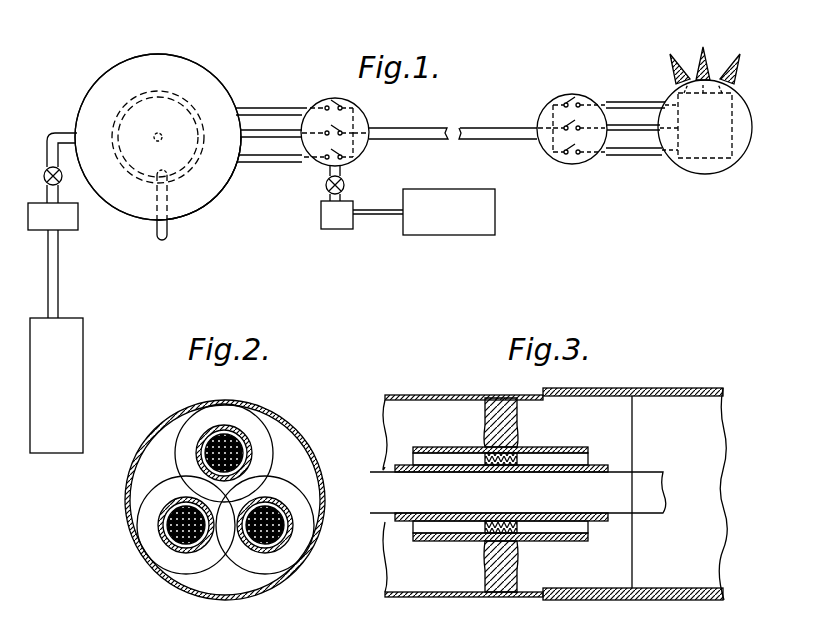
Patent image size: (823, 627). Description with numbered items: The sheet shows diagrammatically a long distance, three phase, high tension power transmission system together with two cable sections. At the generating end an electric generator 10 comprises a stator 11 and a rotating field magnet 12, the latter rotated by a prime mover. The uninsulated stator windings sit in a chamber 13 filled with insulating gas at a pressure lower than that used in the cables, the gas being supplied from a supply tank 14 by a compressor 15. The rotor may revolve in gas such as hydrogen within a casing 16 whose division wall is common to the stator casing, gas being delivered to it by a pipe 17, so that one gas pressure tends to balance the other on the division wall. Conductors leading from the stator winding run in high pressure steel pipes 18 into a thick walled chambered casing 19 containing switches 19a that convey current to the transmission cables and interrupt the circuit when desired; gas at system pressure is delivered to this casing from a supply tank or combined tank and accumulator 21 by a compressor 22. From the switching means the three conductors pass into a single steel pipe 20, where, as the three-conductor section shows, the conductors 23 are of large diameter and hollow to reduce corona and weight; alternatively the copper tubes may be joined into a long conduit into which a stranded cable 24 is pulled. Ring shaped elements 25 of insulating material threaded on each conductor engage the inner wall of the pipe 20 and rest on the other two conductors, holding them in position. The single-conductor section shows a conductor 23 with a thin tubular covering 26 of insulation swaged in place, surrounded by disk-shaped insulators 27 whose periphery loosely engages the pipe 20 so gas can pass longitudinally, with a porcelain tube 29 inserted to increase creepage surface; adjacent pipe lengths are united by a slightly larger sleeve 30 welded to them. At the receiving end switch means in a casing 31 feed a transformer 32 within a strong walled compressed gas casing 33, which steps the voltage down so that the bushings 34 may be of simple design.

In FIG. 1, the electric generator 10 is at (150, 53).
In FIG. 1, the stator 11 is at (202, 75).
In FIG. 1, the rotating field magnet 12 is at (138, 160).
In FIG. 1, the chamber 13 is at (199, 189).
In FIG. 1, the supply tank 14 is at (56, 341).
In FIG. 1, the compressor 15 is at (53, 181).
In FIG. 1, the casing 16 is at (165, 91).
In FIG. 1, the pipe 17 is at (168, 232).
In FIG. 1, the pipes 18 is at (292, 110).
In FIG. 1, the casing 19 is at (327, 99).
In FIG. 1, the switches 19a is at (347, 100).
In FIG. 1, the pipe 20 is at (405, 126).
In FIG. 2, the pipe 20 is at (320, 456).
In FIG. 3, the pipe 20 is at (436, 392).
In FIG. 1, the supply tank 21 is at (424, 212).
In FIG. 1, the compressor 22 is at (337, 229).
In FIG. 2, the conductors 23 is at (250, 444).
In FIG. 3, the conductors 23 is at (518, 492).
In FIG. 2, the stranded cable 24 is at (181, 548).
In FIG. 2, the ring shaped elements 25 is at (246, 417).
In FIG. 3, the tubular covering 26 is at (404, 523).
In FIG. 3, the insulators 27 is at (484, 425).
In FIG. 3, the tube 29 is at (436, 445).
In FIG. 3, the sleeve 30 is at (597, 388).
In FIG. 1, the casing 31 is at (562, 93).
In FIG. 1, the transformer 32 is at (698, 160).
In FIG. 1, the casing 33 is at (740, 163).
In FIG. 1, the bushings 34 is at (672, 64).